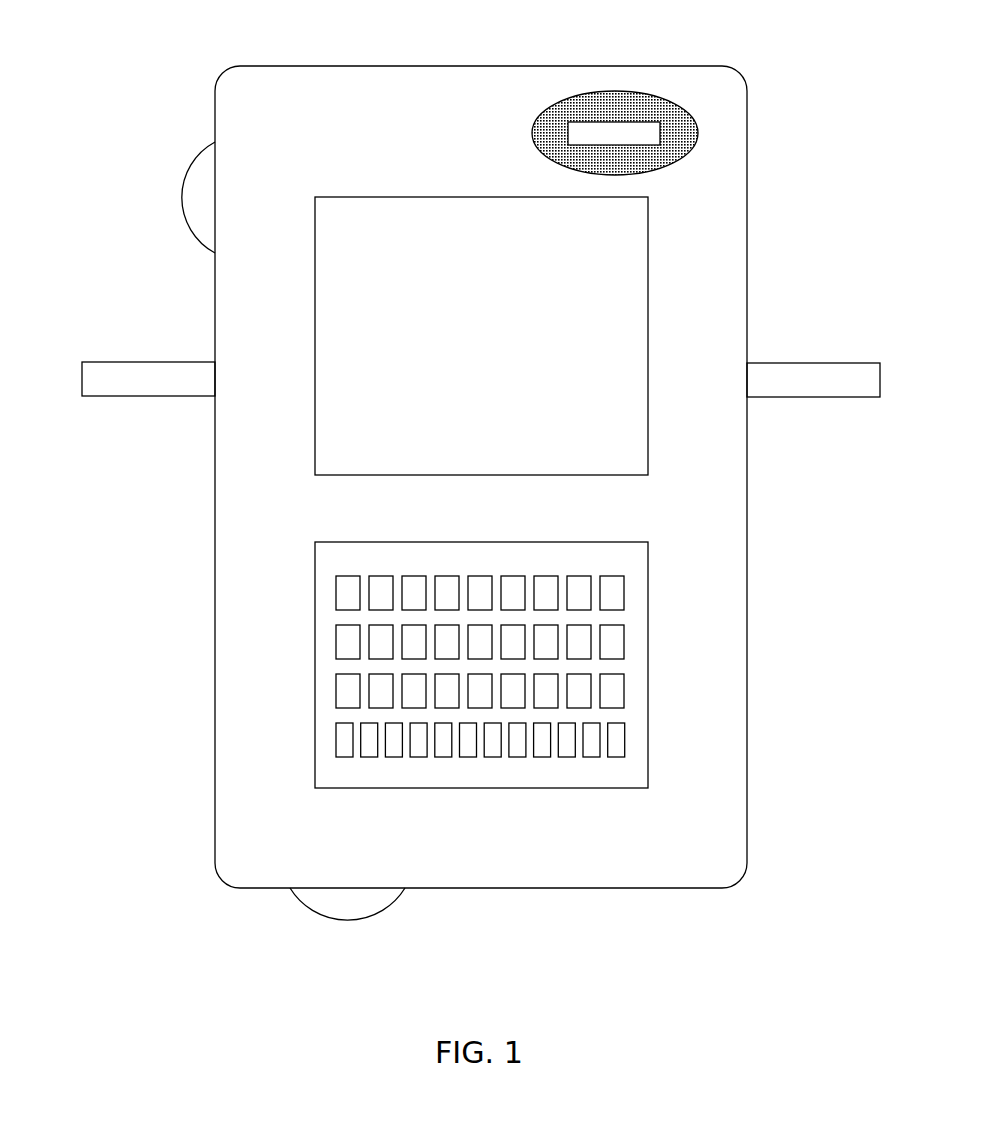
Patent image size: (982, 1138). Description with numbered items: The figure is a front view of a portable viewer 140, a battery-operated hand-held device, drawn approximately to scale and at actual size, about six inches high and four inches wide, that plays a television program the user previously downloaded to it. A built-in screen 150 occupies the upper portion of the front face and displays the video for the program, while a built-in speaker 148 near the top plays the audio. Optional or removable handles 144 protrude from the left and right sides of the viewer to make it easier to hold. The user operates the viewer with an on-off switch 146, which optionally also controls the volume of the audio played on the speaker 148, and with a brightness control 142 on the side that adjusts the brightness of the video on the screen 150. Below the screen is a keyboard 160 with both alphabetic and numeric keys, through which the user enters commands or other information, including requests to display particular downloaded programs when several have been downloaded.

The portable viewer 140 is at (313, 65).
The brightness control 142 is at (195, 163).
The handles 144 is at (115, 362).
The on-off switch 146 is at (347, 920).
The speaker 148 is at (647, 90).
The screen 150 is at (363, 197).
The keyboard 160 is at (378, 540).